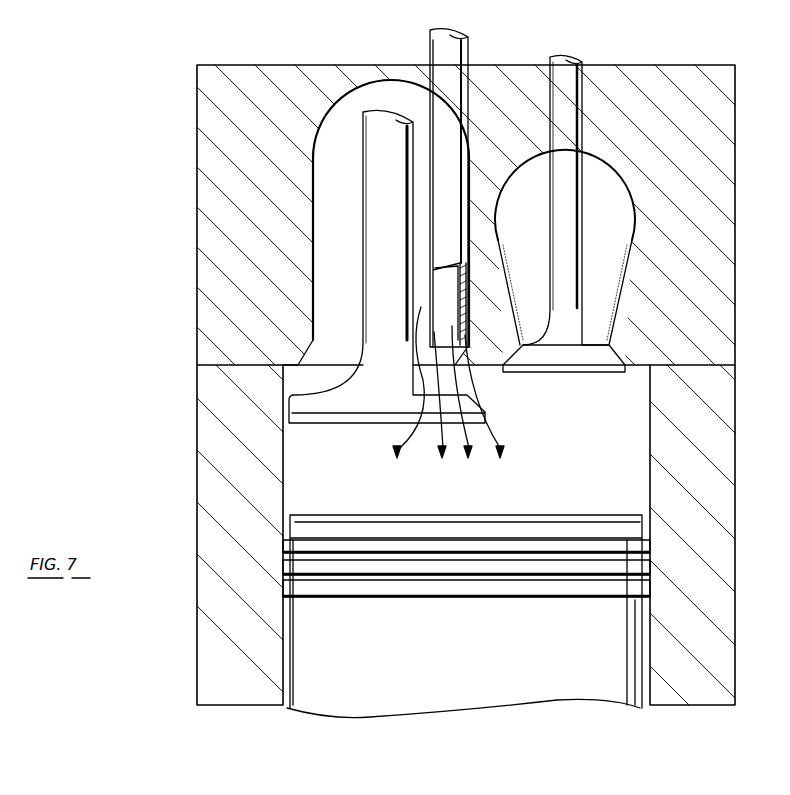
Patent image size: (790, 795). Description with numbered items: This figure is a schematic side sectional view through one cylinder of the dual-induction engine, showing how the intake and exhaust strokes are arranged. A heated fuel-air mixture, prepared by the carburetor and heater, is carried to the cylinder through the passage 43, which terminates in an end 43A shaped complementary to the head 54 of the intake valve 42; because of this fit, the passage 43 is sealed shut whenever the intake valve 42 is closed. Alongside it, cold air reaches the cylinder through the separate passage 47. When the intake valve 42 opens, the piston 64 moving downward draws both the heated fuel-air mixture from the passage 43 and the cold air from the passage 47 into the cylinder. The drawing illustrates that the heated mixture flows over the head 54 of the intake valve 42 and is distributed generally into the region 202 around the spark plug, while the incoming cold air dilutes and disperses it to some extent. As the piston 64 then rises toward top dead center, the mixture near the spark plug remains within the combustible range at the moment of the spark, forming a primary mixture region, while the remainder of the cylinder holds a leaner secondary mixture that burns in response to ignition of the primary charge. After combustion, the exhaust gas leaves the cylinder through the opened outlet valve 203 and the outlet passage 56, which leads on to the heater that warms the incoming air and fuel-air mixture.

The intake valve 42 is at (377, 117).
The passage 43 is at (452, 53).
The end of passage 43A is at (453, 327).
The passage 47 is at (313, 168).
The head of the inlet valve 54 is at (303, 400).
The outlet passage 56 is at (634, 228).
The piston 64 is at (615, 516).
The region 202 is at (503, 450).
The outlet valve 203 is at (565, 62).